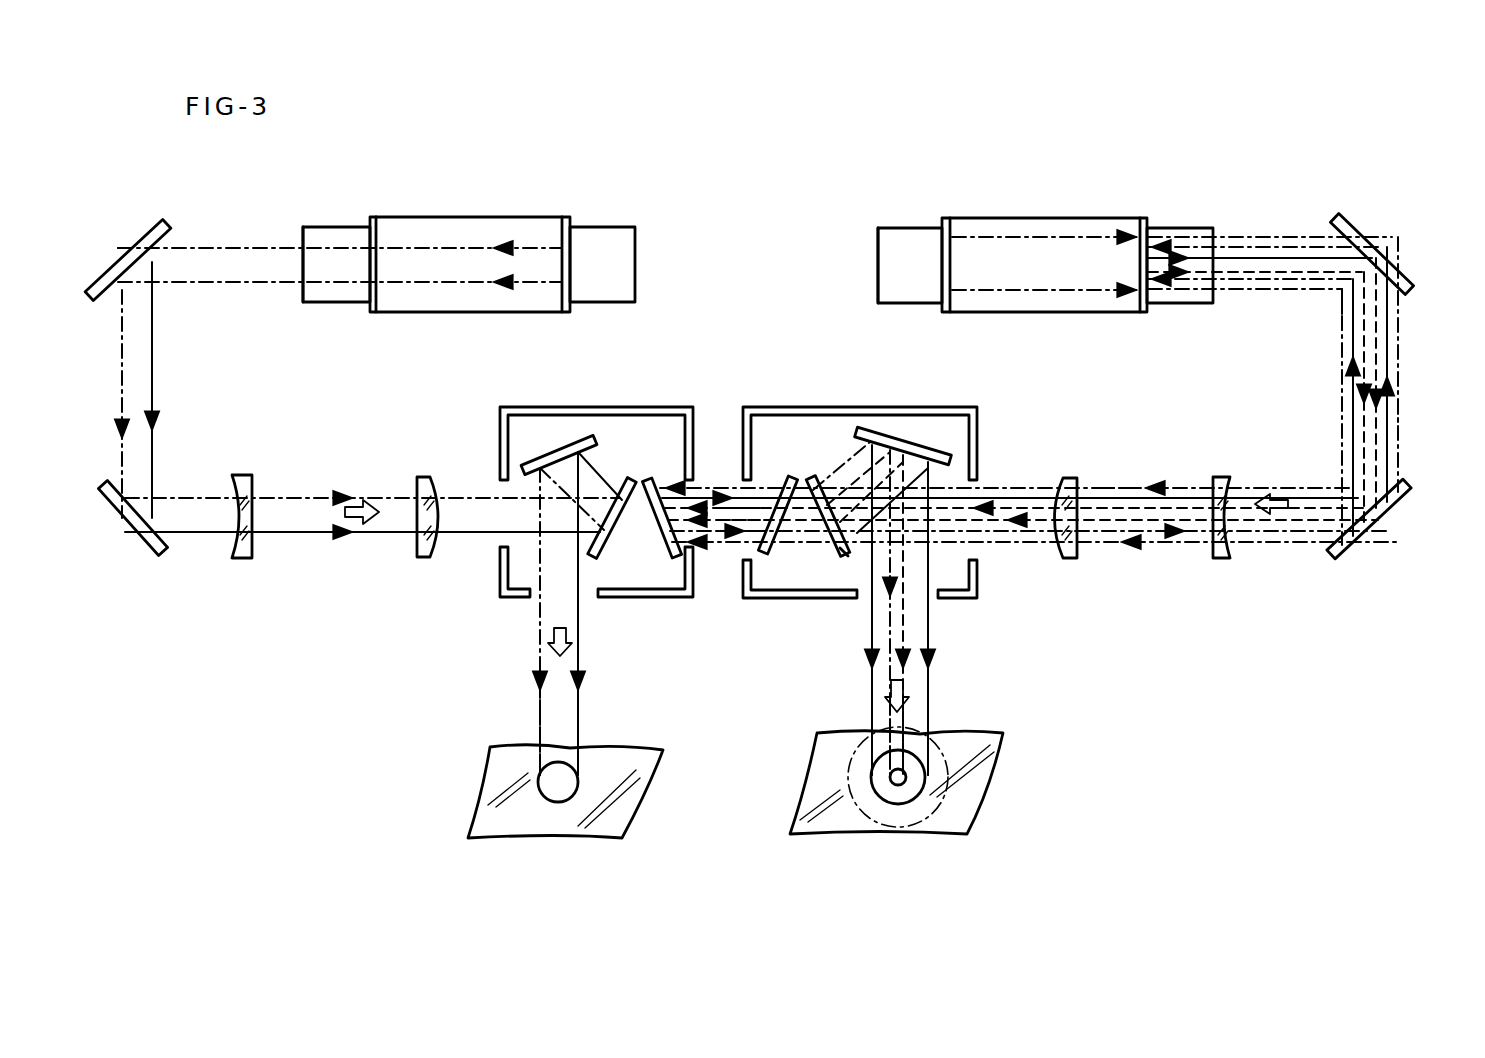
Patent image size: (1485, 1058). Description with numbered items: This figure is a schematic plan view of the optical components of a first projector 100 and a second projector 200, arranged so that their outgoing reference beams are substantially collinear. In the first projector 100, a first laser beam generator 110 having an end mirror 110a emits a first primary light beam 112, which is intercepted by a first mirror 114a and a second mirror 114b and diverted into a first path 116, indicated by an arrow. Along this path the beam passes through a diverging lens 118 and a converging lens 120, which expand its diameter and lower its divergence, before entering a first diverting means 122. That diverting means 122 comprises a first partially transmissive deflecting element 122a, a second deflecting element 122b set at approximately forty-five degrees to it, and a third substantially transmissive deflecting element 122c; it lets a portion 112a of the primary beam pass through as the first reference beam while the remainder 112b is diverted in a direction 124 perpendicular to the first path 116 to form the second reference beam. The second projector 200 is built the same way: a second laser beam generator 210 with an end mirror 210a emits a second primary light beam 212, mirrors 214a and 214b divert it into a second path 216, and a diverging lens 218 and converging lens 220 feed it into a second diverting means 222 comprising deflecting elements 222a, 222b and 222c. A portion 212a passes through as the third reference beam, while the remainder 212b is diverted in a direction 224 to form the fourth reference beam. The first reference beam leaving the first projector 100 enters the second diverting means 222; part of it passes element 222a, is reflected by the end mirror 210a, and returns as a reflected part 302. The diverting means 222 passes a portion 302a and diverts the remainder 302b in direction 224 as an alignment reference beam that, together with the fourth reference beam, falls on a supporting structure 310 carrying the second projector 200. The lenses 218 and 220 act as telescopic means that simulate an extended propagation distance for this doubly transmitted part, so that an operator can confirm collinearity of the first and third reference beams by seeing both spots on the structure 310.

The first projector 100 is at (530, 195).
The first laser beam generator 110 is at (545, 225).
The end mirror 110a is at (376, 232).
The first primary light beam 112 is at (265, 242).
The portion of the first primary beam 112a is at (735, 536).
The remainder of the first primary beam 112b is at (580, 722).
The first mirror 114a is at (150, 250).
The second mirror 114b is at (152, 542).
The first path 116 is at (372, 522).
The diverging lens 118 is at (240, 560).
The converging lens 120 is at (422, 558).
The first diverting means 122 is at (595, 400).
The first partially transmissive deflecting element 122a is at (598, 562).
The second deflecting element 122b is at (548, 450).
The third substantially transmissive deflecting element 122c is at (648, 480).
The direction 124 is at (548, 640).
The second projector 200 is at (1035, 200).
The second laser beam generator 210 is at (1100, 225).
The end mirror 210a is at (1145, 312).
The second primary light beam 212 is at (1395, 412).
The portion of the second primary beam 212a is at (718, 488).
The remainder of the second primary beam 212b is at (928, 716).
The first mirror 214a is at (1368, 245).
The second mirror 214b is at (1375, 518).
The second path 216 is at (1288, 510).
The diverging lens 218 is at (1218, 556).
The converging lens 220 is at (1077, 555).
The second diverting means 222 is at (938, 398).
The first partially transmissive deflecting element 222a is at (848, 558).
The second deflecting element 222b is at (940, 447).
The third substantially transmissive deflecting element 222c is at (808, 478).
The direction 224 is at (872, 703).
The reflected part 302 is at (1375, 330).
The portion of the reflected part 302a is at (758, 510).
The remainder of the reflected part 302b is at (905, 628).
The supporting structure 310 is at (618, 815).